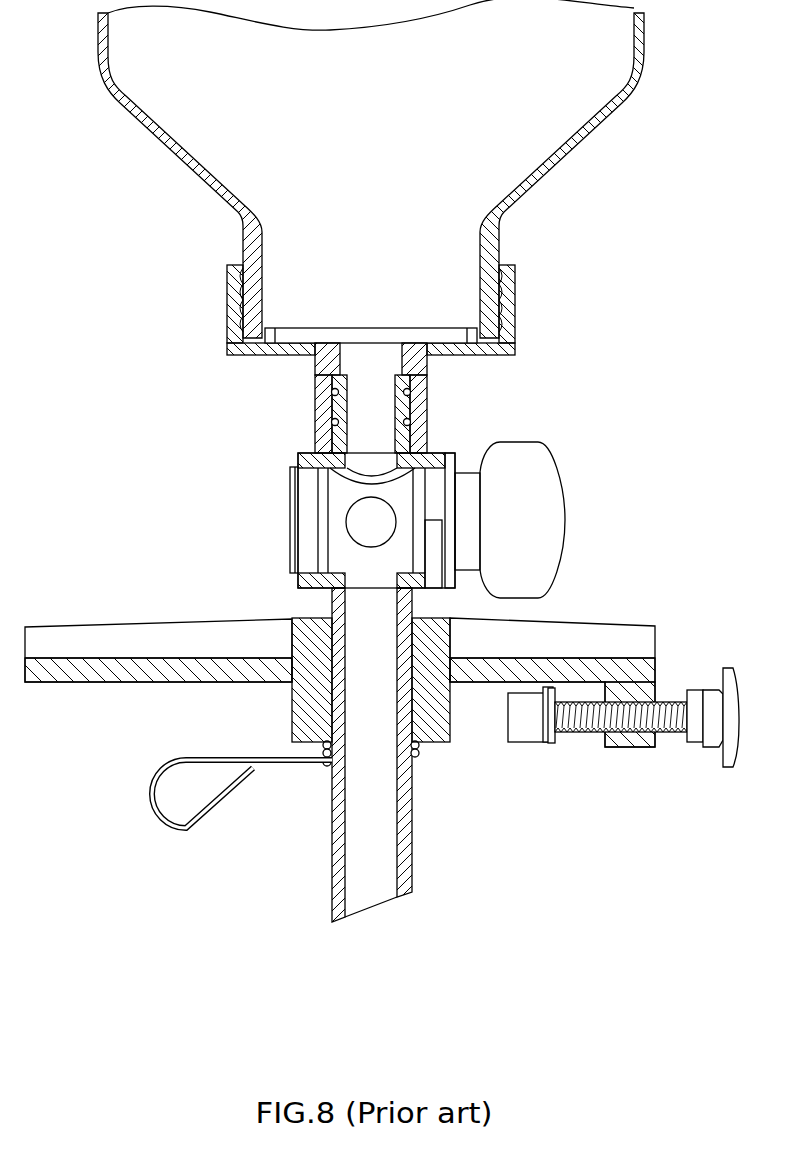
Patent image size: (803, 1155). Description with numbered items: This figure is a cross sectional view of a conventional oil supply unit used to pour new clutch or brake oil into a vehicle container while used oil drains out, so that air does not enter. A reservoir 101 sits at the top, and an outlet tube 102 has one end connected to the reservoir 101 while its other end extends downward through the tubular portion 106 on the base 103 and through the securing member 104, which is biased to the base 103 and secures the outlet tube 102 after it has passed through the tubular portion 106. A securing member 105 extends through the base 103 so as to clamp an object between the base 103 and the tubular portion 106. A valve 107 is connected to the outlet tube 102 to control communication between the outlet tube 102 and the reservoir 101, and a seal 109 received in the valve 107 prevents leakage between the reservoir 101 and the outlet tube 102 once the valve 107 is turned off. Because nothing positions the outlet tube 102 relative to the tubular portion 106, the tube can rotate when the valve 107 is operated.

The reservoir 101 is at (618, 88).
The outlet tube 102 is at (337, 597).
The base 103 is at (136, 628).
The securing member 104 is at (280, 763).
The securing member 105 is at (728, 672).
The tubular portion 106 is at (292, 712).
The valve 107 is at (452, 470).
The seal 109 is at (353, 477).